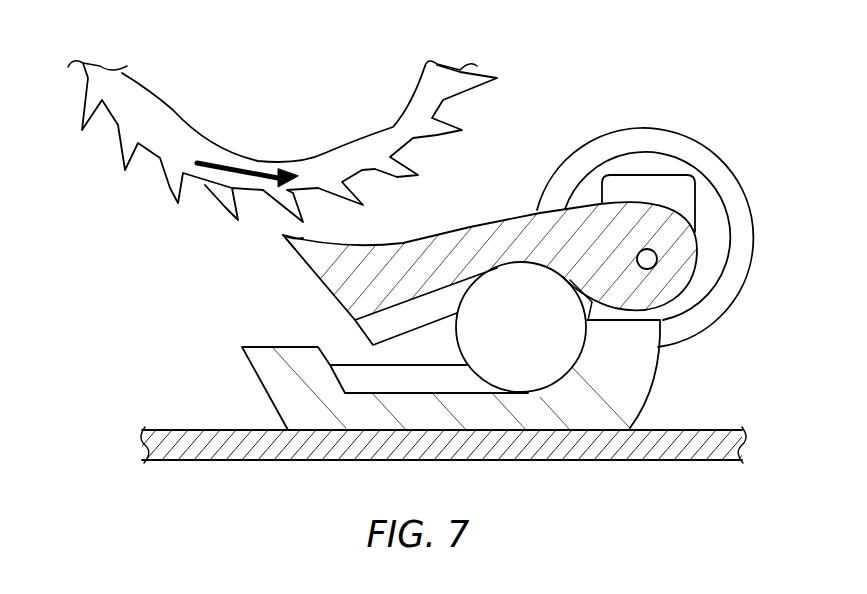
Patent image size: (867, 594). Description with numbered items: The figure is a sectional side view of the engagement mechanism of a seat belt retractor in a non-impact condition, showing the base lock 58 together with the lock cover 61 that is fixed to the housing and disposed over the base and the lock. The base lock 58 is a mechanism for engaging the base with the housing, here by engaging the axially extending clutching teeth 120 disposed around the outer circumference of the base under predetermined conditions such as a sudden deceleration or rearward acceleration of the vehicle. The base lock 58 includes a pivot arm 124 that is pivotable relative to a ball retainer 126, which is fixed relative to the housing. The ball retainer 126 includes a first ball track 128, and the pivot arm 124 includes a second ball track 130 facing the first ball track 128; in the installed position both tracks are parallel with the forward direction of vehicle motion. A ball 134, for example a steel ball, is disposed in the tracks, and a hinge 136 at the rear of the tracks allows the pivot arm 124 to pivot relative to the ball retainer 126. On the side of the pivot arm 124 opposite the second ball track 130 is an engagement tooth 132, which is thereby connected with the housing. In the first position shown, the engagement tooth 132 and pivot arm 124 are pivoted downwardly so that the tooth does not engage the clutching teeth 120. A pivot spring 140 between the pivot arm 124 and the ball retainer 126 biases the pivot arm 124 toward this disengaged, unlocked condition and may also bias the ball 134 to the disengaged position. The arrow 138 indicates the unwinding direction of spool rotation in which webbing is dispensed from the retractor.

The base lock 58 is at (648, 73).
The lock cover 61 is at (678, 462).
The clutching teeth 120 is at (238, 219).
The pivot arm 124 is at (500, 221).
The ball retainer 126 is at (268, 400).
The first ball track 128 is at (357, 393).
The second ball track 130 is at (364, 332).
The engagement tooth 132 is at (282, 236).
The ball 134 is at (580, 358).
The hinge 136 is at (660, 264).
The arrow 138 is at (238, 168).
The pivot spring 140 is at (720, 156).